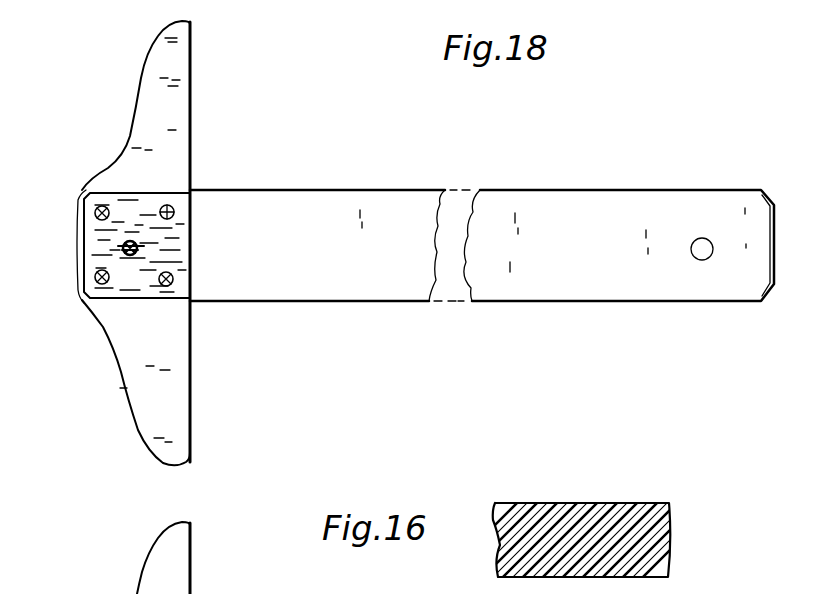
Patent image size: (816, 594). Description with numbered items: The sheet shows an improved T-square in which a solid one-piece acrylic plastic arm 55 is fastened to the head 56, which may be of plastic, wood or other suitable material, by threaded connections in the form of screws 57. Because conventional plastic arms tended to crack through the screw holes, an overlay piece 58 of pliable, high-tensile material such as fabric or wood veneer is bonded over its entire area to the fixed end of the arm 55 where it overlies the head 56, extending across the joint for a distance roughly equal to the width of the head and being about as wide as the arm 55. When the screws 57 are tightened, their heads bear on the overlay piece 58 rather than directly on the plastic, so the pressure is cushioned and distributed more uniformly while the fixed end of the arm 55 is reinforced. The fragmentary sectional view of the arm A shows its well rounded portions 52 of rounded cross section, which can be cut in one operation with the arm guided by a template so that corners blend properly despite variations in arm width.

In FIG. 18, the head 56 is at (137, 78).
In FIG. 16, the head 56 is at (143, 562).
In FIG. 18, the arm 55 is at (492, 188).
In FIG. 18, the overlay piece 58 is at (153, 196).
In FIG. 18, the screws 57 is at (97, 208).
In FIG. 16, the well rounded portions 52 is at (672, 532).
In FIG. 16, the arm A is at (532, 503).